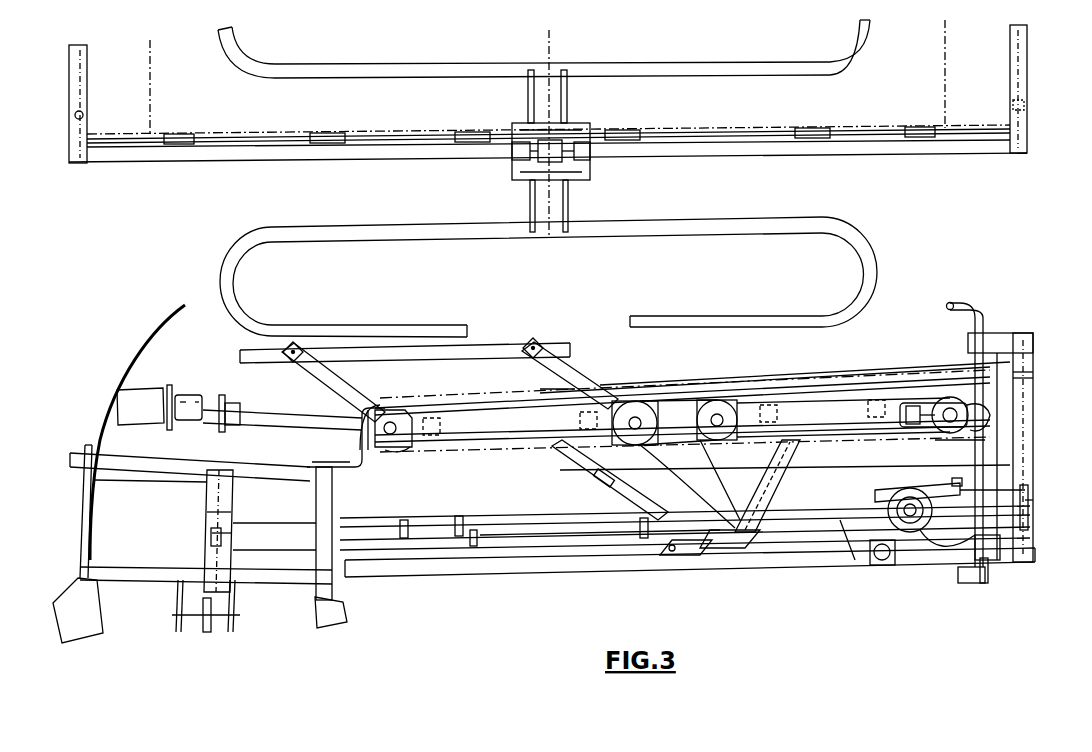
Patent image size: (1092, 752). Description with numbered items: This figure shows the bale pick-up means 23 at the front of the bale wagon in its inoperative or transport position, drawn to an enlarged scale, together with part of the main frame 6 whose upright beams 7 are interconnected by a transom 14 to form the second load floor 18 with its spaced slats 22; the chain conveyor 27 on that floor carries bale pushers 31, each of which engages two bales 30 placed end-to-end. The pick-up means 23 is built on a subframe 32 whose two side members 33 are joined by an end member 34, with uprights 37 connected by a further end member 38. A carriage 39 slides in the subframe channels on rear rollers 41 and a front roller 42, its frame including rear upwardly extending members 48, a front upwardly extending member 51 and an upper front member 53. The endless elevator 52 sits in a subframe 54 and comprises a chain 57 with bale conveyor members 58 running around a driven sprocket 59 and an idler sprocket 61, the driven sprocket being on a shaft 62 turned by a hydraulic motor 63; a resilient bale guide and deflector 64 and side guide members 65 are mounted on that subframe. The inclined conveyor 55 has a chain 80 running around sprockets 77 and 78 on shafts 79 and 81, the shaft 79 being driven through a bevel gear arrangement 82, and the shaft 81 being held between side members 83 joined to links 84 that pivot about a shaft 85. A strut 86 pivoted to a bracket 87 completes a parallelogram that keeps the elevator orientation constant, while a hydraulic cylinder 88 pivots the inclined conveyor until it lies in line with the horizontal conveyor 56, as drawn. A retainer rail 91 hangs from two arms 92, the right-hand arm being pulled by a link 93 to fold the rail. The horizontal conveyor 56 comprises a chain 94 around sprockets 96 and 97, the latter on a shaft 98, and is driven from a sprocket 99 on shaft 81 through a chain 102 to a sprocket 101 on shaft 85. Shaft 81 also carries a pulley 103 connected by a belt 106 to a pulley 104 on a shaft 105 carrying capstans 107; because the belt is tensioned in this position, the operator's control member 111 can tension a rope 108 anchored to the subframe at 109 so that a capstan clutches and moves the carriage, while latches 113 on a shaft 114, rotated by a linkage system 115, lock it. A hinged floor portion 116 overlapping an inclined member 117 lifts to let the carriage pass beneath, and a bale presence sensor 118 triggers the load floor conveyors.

The main frame 6 is at (67, 88).
The main upright beams 7 is at (1028, 100).
The transom 14 is at (228, 161).
The second load floor 18 is at (130, 133).
The slats 22 is at (195, 137).
The pick-up means 23 is at (412, 590).
The chain conveyor 27 is at (505, 185).
The bales 30 is at (533, 96).
The bale pushers 31 is at (866, 48).
The subframe 32 is at (565, 585).
The side members 33 is at (690, 578).
The end member 34 is at (1035, 552).
The uprights 37 is at (1035, 398).
The further end member 38 is at (1030, 358).
The carriage 39 is at (1000, 466).
The rear rollers 41 is at (760, 545).
The front roller 42 is at (878, 566).
The rear upwardly extending members 48 is at (782, 485).
The front upwardly extending member 51 is at (920, 440).
The endless elevator 52 is at (66, 452).
The upper front member 53 is at (912, 403).
The elevator subframe 54 is at (333, 580).
The inclined conveyor 55 is at (462, 398).
The horizontal conveyor 56 is at (885, 388).
The elevator chain 57 is at (232, 502).
The bale conveyor members 58 is at (205, 512).
The driven sprocket 59 is at (226, 402).
The idler sprocket 61 is at (208, 633).
The shaft 62 is at (302, 417).
The hydraulic motor 63 is at (158, 392).
The bale guide and deflector 64 is at (148, 345).
The guide members 65 is at (95, 638).
The sprocket 77 is at (405, 415).
The sprocket 78 is at (636, 400).
The shaft 79 is at (400, 450).
The chain 80 is at (468, 445).
The shaft 81 is at (560, 428).
The bevel gear arrangement 82 is at (385, 410).
The side members 83 is at (482, 445).
The links 84 is at (717, 400).
The shaft 85 is at (760, 422).
The strut 86 is at (440, 540).
The bracket 87 is at (685, 545).
The hydraulic cylinder 88 is at (598, 478).
The bale guide and retainer rail 91 is at (396, 334).
The arms 92 is at (348, 398).
The link 93 is at (690, 445).
The chain 94 is at (868, 385).
The sprocket 96 is at (835, 405).
The sprocket 97 is at (1034, 375).
The shaft 98 is at (958, 408).
The sprocket 99 is at (655, 405).
The sprocket 101 is at (780, 405).
The chain 102 is at (735, 405).
The pulley 103 is at (645, 448).
The pulley 104 is at (905, 490).
The shaft 105 is at (910, 532).
The belt 106 is at (765, 520).
The capstans 107 is at (930, 535).
The rope 108 is at (835, 530).
The rope attachment point 109 is at (305, 467).
The pivotal control member 111 is at (1030, 492).
The latches 113 is at (488, 540).
The shaft 114 is at (567, 556).
The linkage system 115 is at (1030, 512).
The floor portion 116 is at (604, 388).
The inclined member 117 is at (995, 422).
The bale presence sensor 118 is at (984, 318).